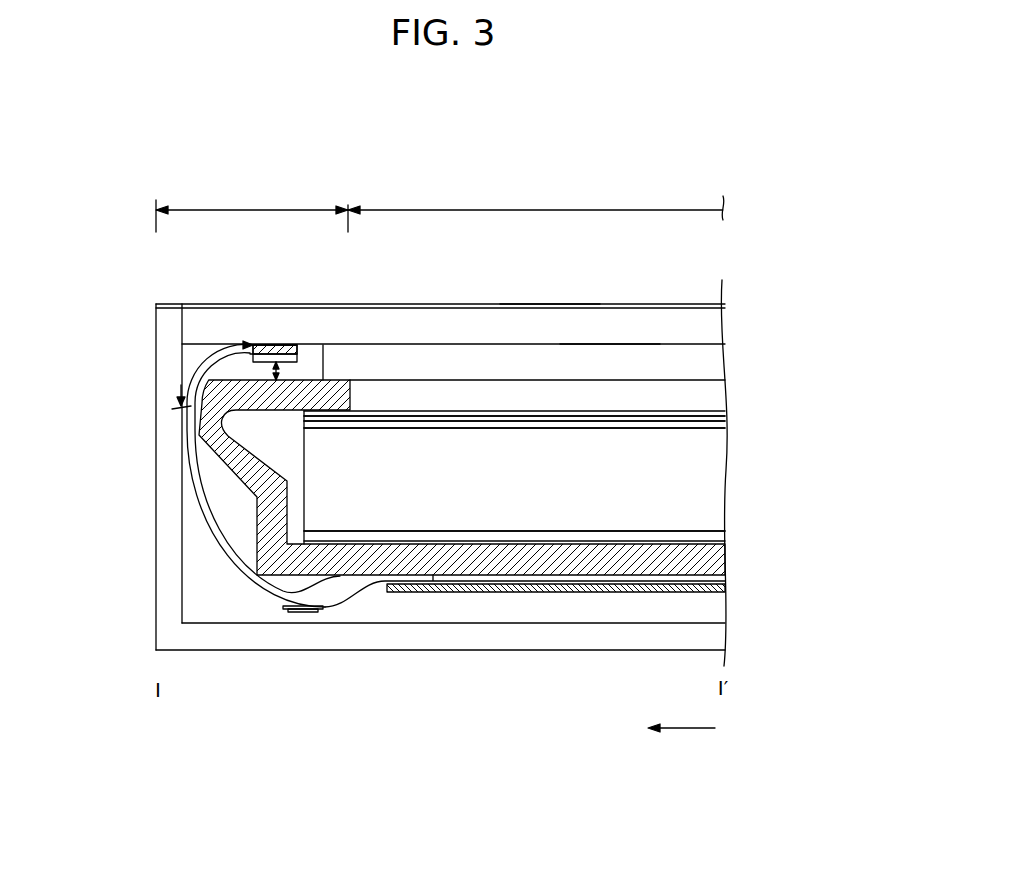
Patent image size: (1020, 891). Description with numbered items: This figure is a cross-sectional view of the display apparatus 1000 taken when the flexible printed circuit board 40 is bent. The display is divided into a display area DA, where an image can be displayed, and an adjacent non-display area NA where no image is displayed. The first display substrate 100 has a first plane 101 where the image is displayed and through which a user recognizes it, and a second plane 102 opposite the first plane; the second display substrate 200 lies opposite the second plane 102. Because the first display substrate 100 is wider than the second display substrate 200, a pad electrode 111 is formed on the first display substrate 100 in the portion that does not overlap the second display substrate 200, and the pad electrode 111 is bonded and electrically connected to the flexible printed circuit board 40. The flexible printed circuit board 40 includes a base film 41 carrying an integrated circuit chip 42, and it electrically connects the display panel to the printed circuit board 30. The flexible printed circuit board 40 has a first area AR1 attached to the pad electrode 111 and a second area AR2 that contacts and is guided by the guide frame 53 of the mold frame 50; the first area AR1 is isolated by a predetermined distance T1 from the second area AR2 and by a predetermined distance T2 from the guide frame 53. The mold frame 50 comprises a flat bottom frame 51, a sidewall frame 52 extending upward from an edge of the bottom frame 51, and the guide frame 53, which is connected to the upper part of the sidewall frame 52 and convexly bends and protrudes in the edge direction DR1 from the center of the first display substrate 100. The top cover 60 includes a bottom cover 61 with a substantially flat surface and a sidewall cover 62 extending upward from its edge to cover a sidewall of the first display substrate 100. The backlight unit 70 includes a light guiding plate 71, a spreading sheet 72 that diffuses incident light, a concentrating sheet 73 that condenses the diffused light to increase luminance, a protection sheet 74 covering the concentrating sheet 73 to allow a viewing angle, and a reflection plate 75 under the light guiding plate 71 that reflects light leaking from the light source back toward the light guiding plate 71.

The display apparatus 1000 is at (682, 187).
The first display substrate 100 is at (708, 322).
The first plane 101 is at (540, 304).
The second plane 102 is at (605, 343).
The second display substrate 200 is at (708, 362).
The backlight unit 70 is at (787, 388).
The light guiding plate 71 is at (710, 482).
The spreading sheet 72 is at (722, 424).
The concentrating sheet 73 is at (722, 418).
The protection sheet 74 is at (722, 413).
The reflection plate 75 is at (727, 537).
The mold frame 50 is at (89, 443).
The bottom frame 51 is at (285, 593).
The sidewall frame 52 is at (258, 505).
The guide frame 53 is at (200, 445).
The top cover 60 is at (89, 600).
The bottom cover 61 is at (222, 637).
The sidewall cover 62 is at (167, 594).
The flexible printed circuit board 40 is at (387, 703).
The base film 41 is at (347, 593).
The integrated circuit chip 42 is at (305, 611).
The printed circuit board 30 is at (545, 593).
The pad electrode 111 is at (285, 344).
The predetermined distance T1 is at (243, 345).
The predetermined distance T2 is at (282, 371).
The first area AR1 is at (268, 355).
The second area AR2 is at (178, 418).
The non-display area NA is at (252, 213).
The display area DA is at (536, 206).
The edge direction DR1 is at (702, 728).